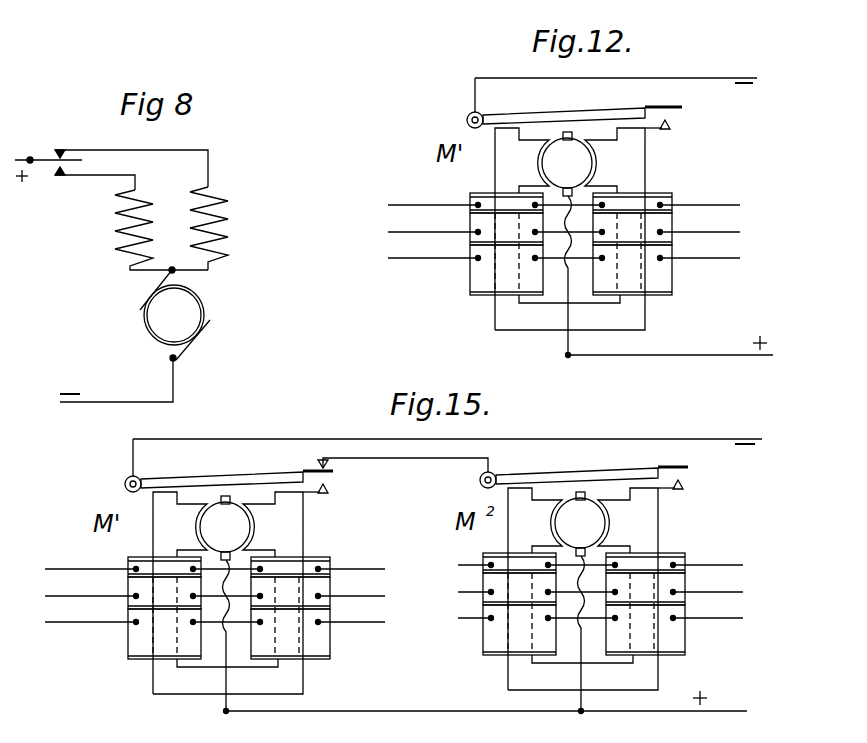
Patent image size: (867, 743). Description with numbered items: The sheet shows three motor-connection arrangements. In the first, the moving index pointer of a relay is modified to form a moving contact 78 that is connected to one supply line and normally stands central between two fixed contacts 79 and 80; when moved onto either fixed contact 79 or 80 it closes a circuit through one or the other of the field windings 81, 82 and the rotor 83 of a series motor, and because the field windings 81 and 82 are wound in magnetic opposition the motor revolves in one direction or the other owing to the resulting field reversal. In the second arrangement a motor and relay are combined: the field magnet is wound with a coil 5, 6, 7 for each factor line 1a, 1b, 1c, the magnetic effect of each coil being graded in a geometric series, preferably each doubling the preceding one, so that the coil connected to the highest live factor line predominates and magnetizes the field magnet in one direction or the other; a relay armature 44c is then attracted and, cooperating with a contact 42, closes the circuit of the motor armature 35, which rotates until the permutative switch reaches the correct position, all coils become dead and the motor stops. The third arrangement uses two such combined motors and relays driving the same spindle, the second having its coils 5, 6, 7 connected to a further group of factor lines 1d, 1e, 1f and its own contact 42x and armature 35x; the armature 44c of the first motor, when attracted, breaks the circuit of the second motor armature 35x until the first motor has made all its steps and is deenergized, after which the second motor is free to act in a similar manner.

In FIG. 8, the moving contact 78 is at (22, 176).
In FIG. 8, the fixed contact 79 is at (88, 150).
In FIG. 8, the fixed contact 80 is at (88, 177).
In FIG. 8, the field winding 81 is at (190, 203).
In FIG. 8, the field winding 82 is at (115, 230).
In FIG. 8, the rotor 83 is at (162, 314).
In FIG. 12, the factor line 1a is at (566, 255).
In FIG. 15, the factor line 1a is at (228, 614).
In FIG. 12, the factor line 1b is at (566, 229).
In FIG. 15, the factor line 1b is at (228, 589).
In FIG. 12, the factor line 1c is at (566, 203).
In FIG. 15, the factor line 1c is at (228, 562).
In FIG. 15, the factor line 1d is at (602, 615).
In FIG. 15, the factor line 1e is at (602, 590).
In FIG. 15, the factor line 1f is at (601, 563).
In FIG. 12, the field coil 5 is at (571, 270).
In FIG. 15, the field coil 5 is at (406, 632).
In FIG. 12, the field coil 6 is at (571, 229).
In FIG. 15, the field coil 6 is at (406, 591).
In FIG. 12, the field coil 7 is at (571, 203).
In FIG. 15, the field coil 7 is at (406, 565).
In FIG. 12, the motor armature 35 is at (567, 164).
In FIG. 15, the motor armature 35 is at (225, 528).
In FIG. 15, the motor armature 35x is at (580, 524).
In FIG. 12, the contact 42 is at (671, 127).
In FIG. 15, the contact 42 is at (331, 489).
In FIG. 15, the contact 42x is at (690, 483).
In FIG. 12, the relay armature 44c is at (556, 117).
In FIG. 15, the relay armature 44c is at (406, 467).